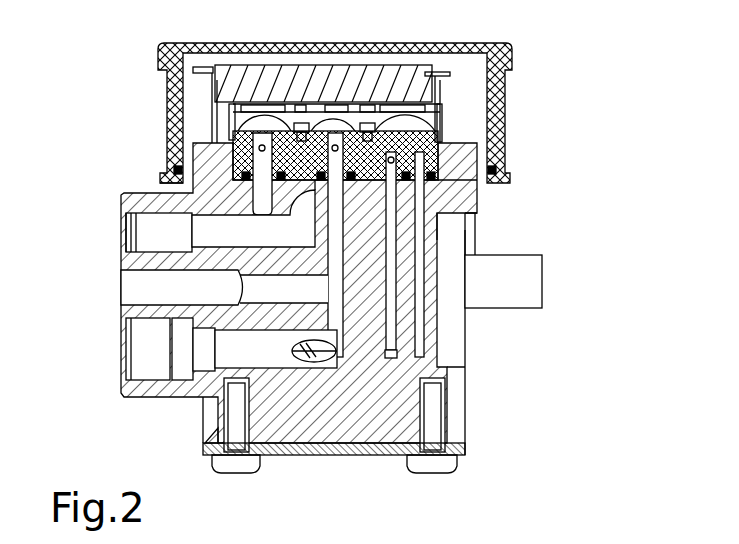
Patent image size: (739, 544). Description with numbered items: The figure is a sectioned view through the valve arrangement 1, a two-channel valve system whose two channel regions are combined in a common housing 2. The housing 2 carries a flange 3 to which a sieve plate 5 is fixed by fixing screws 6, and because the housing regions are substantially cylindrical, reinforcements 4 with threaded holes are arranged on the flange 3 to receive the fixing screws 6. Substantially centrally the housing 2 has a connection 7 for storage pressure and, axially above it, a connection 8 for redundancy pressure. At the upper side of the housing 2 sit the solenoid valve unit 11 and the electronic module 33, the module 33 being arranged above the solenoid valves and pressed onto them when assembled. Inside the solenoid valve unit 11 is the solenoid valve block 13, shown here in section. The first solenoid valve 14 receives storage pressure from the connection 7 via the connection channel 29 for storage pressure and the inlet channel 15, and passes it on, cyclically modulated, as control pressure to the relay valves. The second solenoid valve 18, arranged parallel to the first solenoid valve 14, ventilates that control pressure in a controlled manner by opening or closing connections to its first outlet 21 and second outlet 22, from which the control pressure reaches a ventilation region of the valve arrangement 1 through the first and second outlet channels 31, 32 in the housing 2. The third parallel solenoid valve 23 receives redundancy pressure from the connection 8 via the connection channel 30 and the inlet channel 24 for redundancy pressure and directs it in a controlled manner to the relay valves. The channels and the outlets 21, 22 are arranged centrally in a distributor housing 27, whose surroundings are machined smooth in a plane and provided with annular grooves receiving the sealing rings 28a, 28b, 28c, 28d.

The valve arrangement 1 is at (577, 43).
The housing 2 is at (432, 318).
The flange 3 is at (458, 436).
The reinforcement with threaded hole 4 is at (458, 407).
The sieve plate 5 is at (333, 457).
The fixing screws 6 is at (437, 470).
The connection for storage pressure 7 is at (138, 358).
The connection for redundancy pressure 8 is at (140, 222).
The solenoid valve unit 11 is at (140, 83).
The solenoid valve block 13 is at (468, 102).
The first solenoid valve 14 is at (355, 125).
The inlet channel for storage pressure 15 is at (312, 122).
The second solenoid valve 18 is at (407, 122).
The first outlet from the solenoid valve 18 21 is at (445, 180).
The second outlet from the solenoid valve 18 22 is at (478, 158).
The third solenoid valve for redundancy pressure 23 is at (250, 118).
The inlet channel for redundancy pressure 24 is at (233, 142).
The distributor housing 27 is at (258, 131).
The sealing ring 28a is at (437, 195).
The sealing ring 28b is at (445, 222).
The sealing ring 28c is at (172, 176).
The sealing ring 28d is at (125, 235).
The connection channel for storage pressure 29 is at (330, 287).
The connection channel for redundancy pressure 30 is at (262, 160).
The first outlet channel in the housing 2 31 is at (396, 350).
The second outlet channel in the housing 2 32 is at (440, 287).
The electronic module 33 is at (293, 75).